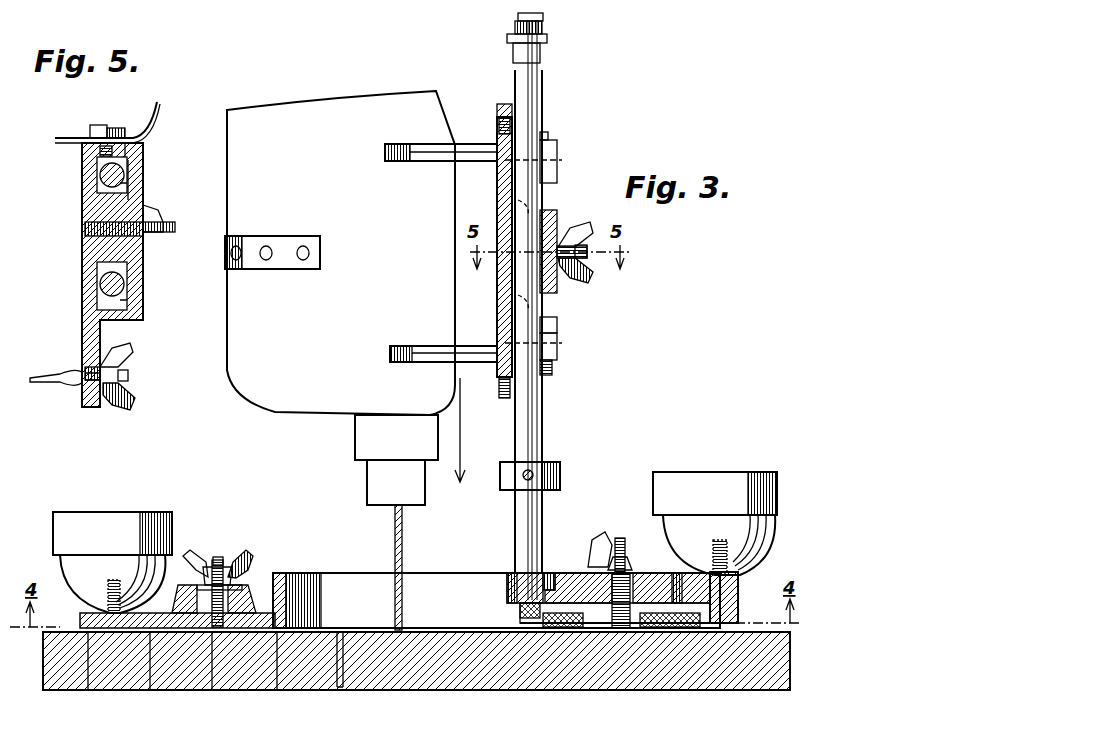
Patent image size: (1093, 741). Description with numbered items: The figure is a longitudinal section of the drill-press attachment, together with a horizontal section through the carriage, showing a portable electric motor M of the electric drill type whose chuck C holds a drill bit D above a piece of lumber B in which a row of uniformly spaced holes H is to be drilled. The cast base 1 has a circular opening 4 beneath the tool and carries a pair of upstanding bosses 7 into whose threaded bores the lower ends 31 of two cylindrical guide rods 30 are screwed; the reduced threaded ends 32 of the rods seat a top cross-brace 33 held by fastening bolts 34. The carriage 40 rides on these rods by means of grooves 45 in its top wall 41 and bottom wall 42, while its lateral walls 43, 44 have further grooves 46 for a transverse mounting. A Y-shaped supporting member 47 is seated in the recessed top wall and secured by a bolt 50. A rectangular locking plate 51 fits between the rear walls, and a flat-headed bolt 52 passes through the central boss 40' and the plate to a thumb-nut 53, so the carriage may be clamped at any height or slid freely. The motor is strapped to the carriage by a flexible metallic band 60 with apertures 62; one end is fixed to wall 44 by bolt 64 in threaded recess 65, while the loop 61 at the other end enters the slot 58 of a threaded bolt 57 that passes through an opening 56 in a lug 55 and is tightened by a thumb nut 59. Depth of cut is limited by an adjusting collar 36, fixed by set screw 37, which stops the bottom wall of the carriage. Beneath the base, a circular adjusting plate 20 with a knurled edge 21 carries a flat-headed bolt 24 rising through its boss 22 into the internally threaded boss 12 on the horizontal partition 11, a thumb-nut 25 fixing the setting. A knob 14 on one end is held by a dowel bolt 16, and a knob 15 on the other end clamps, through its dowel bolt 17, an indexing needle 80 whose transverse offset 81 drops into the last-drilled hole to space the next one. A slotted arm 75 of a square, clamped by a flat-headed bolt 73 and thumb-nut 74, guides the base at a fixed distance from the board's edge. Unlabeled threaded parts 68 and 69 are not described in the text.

In FIG. 5, the flexible metallic band 60 is at (62, 138).
In FIG. 3, the flexible metallic band 60 is at (286, 270).
In FIG. 5, the bolt 64 is at (96, 125).
In FIG. 5, the threaded recess 65 is at (99, 151).
In FIG. 5, the lateral wall 44 is at (140, 148).
In FIG. 5, the locking plate 51 is at (140, 173).
In FIG. 3, the locking plate 51 is at (557, 216).
In FIG. 5, the guide rods 30 is at (100, 177).
In FIG. 3, the guide rods 30 is at (543, 70).
In FIG. 5, the grooves 45 is at (123, 192).
In FIG. 3, the grooves 45 is at (557, 161).
In FIG. 5, the flat-headed bolt 52 is at (86, 228).
In FIG. 3, the flat-headed bolt 52 is at (582, 247).
In FIG. 5, the thumb-nut 53 is at (158, 218).
In FIG. 3, the thumb-nut 53 is at (590, 275).
In FIG. 5, the carriage 40 is at (97, 275).
In FIG. 3, the carriage 40 is at (491, 247).
In FIG. 5, the central boss 40' is at (75, 255).
In FIG. 5, the lateral wall 43 is at (140, 322).
In FIG. 3, the lateral wall 43 is at (557, 322).
In FIG. 5, the opening 56 is at (88, 367).
In FIG. 5, the threaded bolt 57 is at (130, 376).
In FIG. 5, the slot 58 is at (88, 381).
In FIG. 5, the loop 61 is at (64, 383).
In FIG. 5, the thumb nut 59 is at (135, 400).
In FIG. 5, the lug 55 is at (92, 407).
In FIG. 3, the portable electric motor M is at (296, 385).
In FIG. 3, the apertures 62 is at (303, 246).
In FIG. 3, the chuck C is at (368, 488).
In FIG. 3, the drill bit D is at (403, 549).
In FIG. 3, the Y-shaped supporting member 47 is at (418, 161).
In FIG. 3, the nut 68 is at (504, 104).
In FIG. 3, the screw 69 is at (498, 124).
In FIG. 3, the threaded ends 32 is at (543, 16).
In FIG. 3, the fastening bolts 34 is at (515, 28).
In FIG. 3, the top cross-brace 33 is at (547, 40).
In FIG. 3, the top wall 41 is at (552, 144).
In FIG. 3, the bolt 50 is at (543, 130).
In FIG. 3, the grooves 46 is at (545, 195).
In FIG. 3, the bottom wall 42 is at (556, 366).
In FIG. 3, the adjusting collar 36 is at (500, 476).
In FIG. 3, the set screw 37 is at (524, 482).
In FIG. 3, the piece of lumber B is at (450, 672).
In FIG. 3, the holes H is at (265, 690).
In FIG. 3, the base 1 is at (330, 572).
In FIG. 3, the circular opening 4 is at (450, 587).
In FIG. 3, the indexing needle 80 is at (323, 628).
In FIG. 3, the transverse offset 81 is at (342, 645).
In FIG. 3, the knob 15 is at (96, 512).
In FIG. 3, the dowel bolt 17 is at (106, 588).
In FIG. 3, the arm 75 is at (192, 600).
In FIG. 3, the flat-headed bolt 73 is at (217, 558).
In FIG. 3, the thumb-nut 74 is at (190, 562).
In FIG. 3, the upstanding bosses 7 is at (548, 573).
In FIG. 3, the boss 22 is at (559, 588).
In FIG. 3, the internally threaded boss 12 is at (598, 580).
In FIG. 3, the lower ends 31 is at (519, 608).
In FIG. 3, the flat-headed bolt 24 is at (620, 538).
In FIG. 3, the thumb-nut 25 is at (596, 540).
In FIG. 3, the adjusting plate 20 is at (671, 588).
In FIG. 3, the horizontal partition 11 is at (688, 578).
In FIG. 3, the dowel bolt 16 is at (738, 580).
In FIG. 3, the knurled peripheral edge 21 is at (738, 617).
In FIG. 3, the knob 14 is at (706, 478).